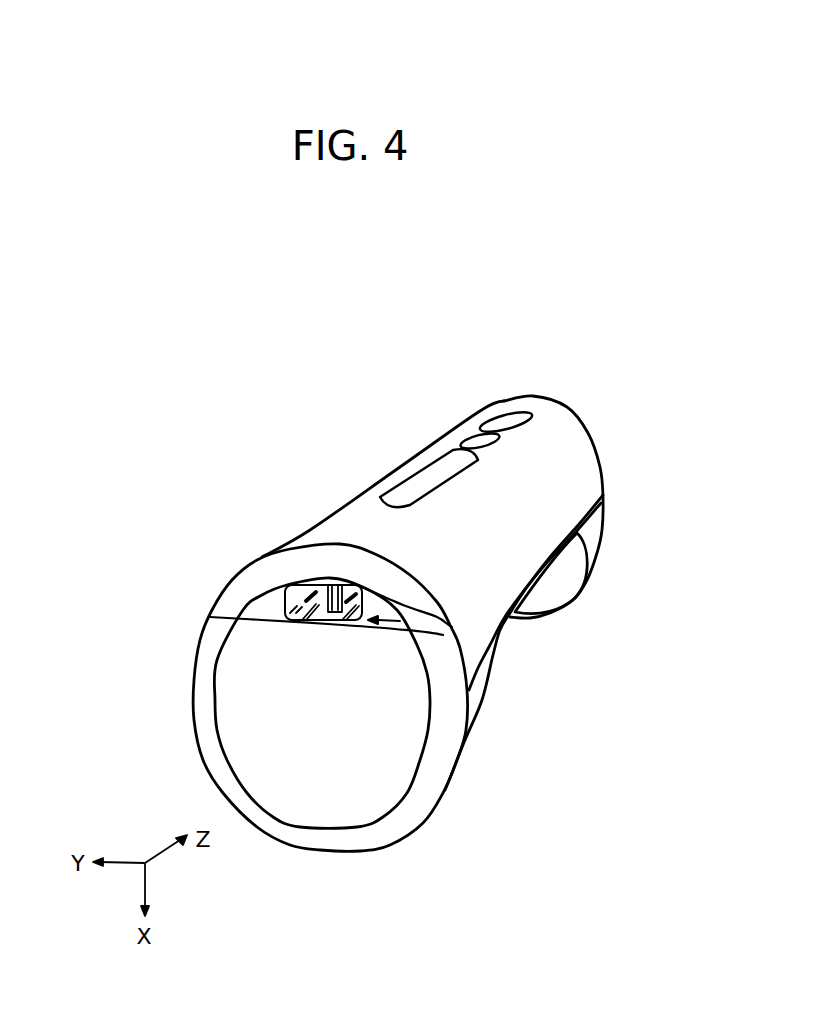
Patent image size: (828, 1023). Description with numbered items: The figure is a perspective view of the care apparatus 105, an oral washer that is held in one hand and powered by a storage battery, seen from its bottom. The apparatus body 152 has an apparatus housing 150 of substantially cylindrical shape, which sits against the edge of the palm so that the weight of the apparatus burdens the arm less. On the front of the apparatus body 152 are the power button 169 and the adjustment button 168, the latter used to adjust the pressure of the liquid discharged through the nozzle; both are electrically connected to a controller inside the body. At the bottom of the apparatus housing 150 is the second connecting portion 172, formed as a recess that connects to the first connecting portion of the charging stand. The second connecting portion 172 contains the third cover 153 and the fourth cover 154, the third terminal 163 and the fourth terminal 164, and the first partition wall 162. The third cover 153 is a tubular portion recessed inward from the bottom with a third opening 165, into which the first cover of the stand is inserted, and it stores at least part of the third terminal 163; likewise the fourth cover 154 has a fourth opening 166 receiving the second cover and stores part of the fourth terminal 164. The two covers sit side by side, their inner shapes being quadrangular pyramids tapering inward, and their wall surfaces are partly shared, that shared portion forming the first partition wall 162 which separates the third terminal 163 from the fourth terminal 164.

The care apparatus 105 is at (583, 345).
The apparatus housing 150 is at (580, 468).
The apparatus body 152 is at (460, 425).
The third cover 153 is at (293, 590).
The fourth cover 154 is at (339, 583).
The first partition wall 162 is at (292, 585).
The third terminal 163 is at (287, 595).
The fourth terminal 164 is at (452, 627).
The third opening 165 is at (302, 622).
The fourth opening 166 is at (327, 618).
The adjustment button 168 is at (478, 438).
The power button 169 is at (500, 420).
The second connecting portion 172 is at (443, 635).